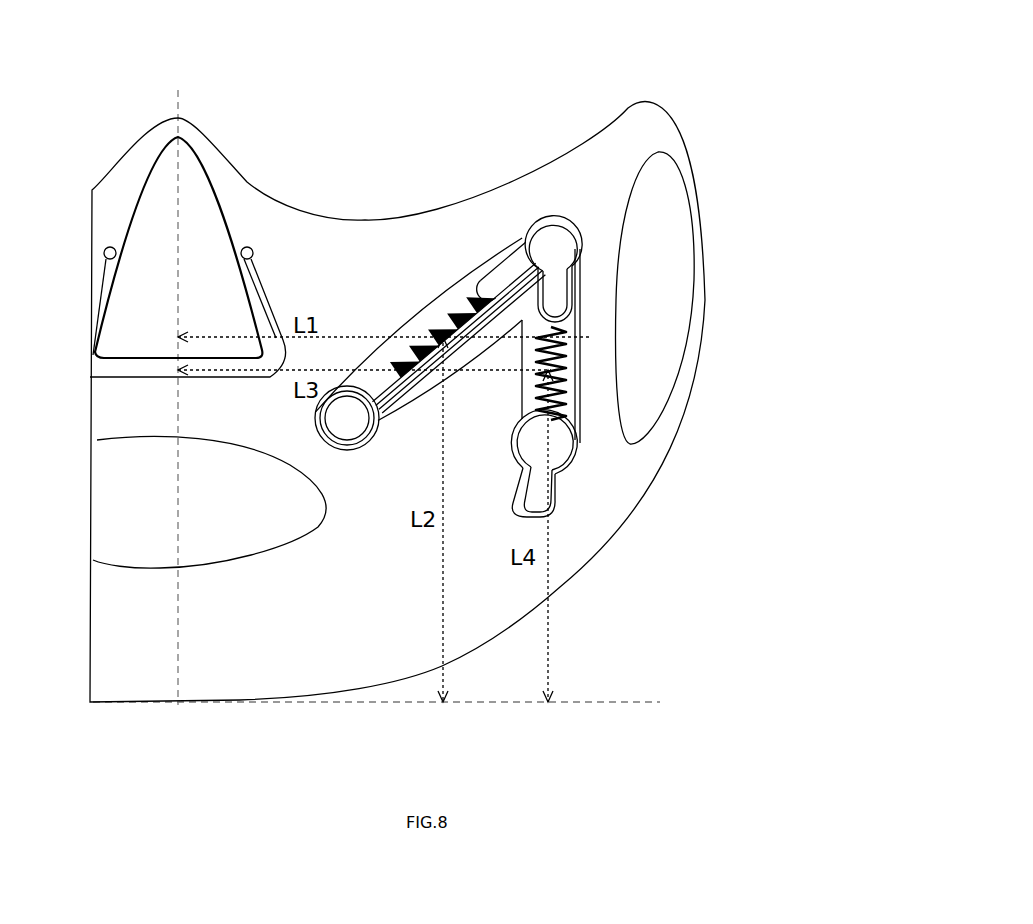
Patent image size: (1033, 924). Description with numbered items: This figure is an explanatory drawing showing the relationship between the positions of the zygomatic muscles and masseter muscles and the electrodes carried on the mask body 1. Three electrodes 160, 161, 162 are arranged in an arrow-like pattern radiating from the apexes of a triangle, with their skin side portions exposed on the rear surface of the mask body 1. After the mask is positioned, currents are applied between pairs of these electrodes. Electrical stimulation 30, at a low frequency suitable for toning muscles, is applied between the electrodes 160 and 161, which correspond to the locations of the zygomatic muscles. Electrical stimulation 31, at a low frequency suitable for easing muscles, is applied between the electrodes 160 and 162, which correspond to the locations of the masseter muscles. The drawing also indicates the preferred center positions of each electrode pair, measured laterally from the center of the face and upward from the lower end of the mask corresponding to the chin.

The mask body 1 is at (702, 170).
The electrical stimulation 30 is at (439, 300).
The electrical stimulation 31 is at (566, 373).
The electrode 160 is at (546, 220).
The electrode 161 is at (333, 392).
The electrode 162 is at (575, 468).